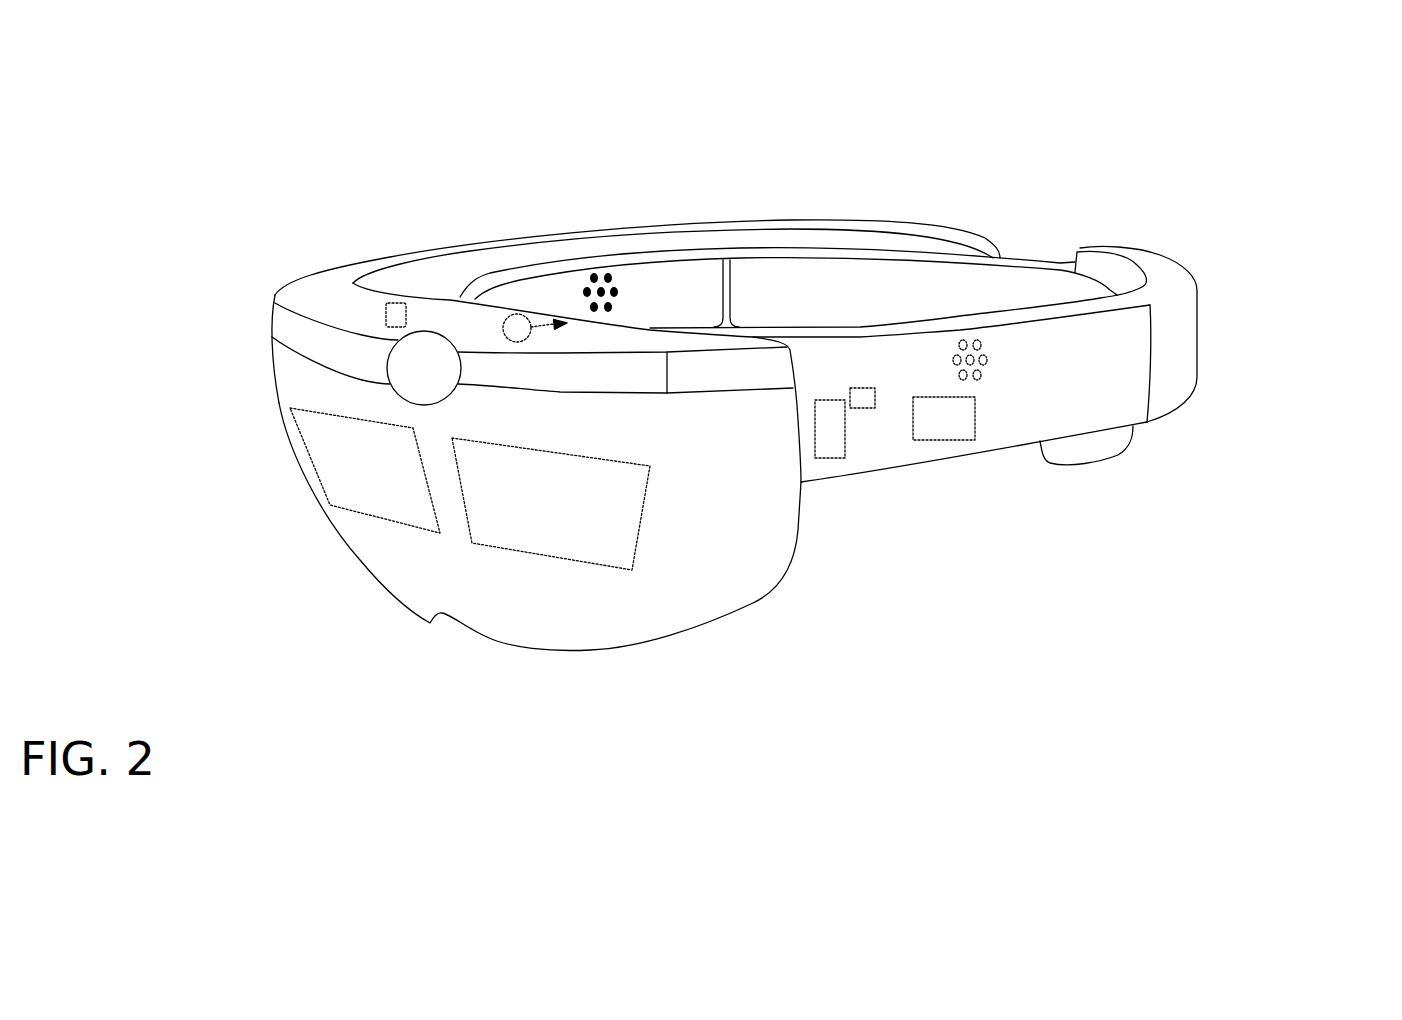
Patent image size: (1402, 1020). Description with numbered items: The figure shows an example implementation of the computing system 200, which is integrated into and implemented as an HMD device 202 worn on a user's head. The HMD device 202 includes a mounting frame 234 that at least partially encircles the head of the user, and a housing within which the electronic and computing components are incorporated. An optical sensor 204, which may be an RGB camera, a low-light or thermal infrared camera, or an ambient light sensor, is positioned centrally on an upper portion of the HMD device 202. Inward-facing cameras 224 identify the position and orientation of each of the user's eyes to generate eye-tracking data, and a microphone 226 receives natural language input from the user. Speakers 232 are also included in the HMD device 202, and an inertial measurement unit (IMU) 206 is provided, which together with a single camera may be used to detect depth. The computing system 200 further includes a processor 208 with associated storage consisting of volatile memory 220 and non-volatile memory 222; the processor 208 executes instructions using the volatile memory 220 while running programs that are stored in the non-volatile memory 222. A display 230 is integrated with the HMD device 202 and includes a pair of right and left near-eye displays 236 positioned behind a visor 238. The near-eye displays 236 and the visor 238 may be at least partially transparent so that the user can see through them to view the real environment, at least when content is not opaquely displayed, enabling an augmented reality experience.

The computing system 200 is at (1022, 180).
The HMD device 202 is at (1210, 300).
The optical sensor 204 is at (387, 378).
The inertial measurement unit 206 is at (900, 375).
The processor 208 is at (830, 458).
The volatile memory 220 is at (975, 428).
The non-volatile memory 222 is at (944, 418).
The inward-facing cameras 224 is at (527, 314).
The microphone 226 is at (395, 303).
The display 230 is at (584, 652).
The speakers 232 is at (617, 292).
The mounting frame 234 is at (1017, 455).
The near-eye displays 236 is at (405, 523).
The visor 238 is at (380, 583).